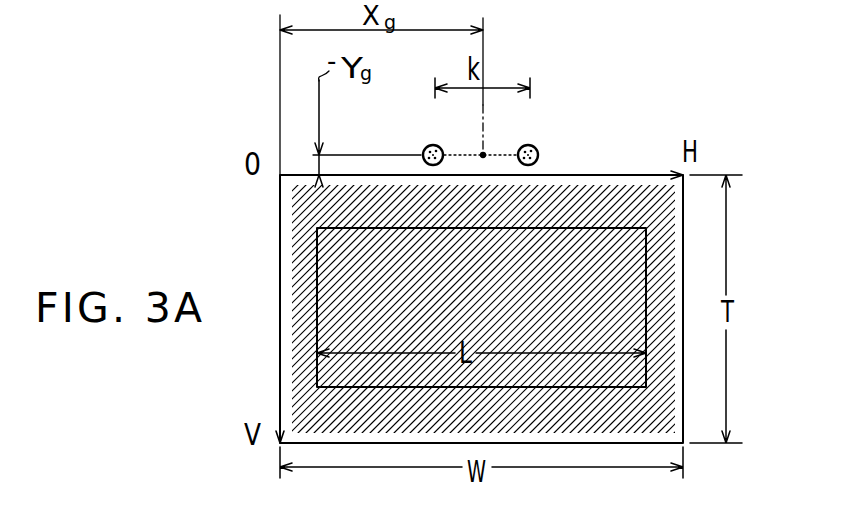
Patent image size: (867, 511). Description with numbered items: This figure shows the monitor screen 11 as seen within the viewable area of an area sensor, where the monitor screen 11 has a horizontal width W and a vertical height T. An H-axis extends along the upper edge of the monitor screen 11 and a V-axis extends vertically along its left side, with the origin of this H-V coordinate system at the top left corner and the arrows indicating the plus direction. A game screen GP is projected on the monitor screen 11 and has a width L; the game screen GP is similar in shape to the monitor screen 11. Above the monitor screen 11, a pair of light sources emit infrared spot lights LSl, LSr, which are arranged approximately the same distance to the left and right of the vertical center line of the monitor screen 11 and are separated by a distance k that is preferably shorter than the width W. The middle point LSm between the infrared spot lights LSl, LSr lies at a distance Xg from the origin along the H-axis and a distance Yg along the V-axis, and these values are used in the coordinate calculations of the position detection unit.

The monitor screen 11 is at (588, 175).
The game screen GP is at (647, 280).
The left infrared spot light LSl is at (433, 145).
The right infrared spot light LSr is at (528, 145).
The middle point between the infrared spot lights LSm is at (483, 155).